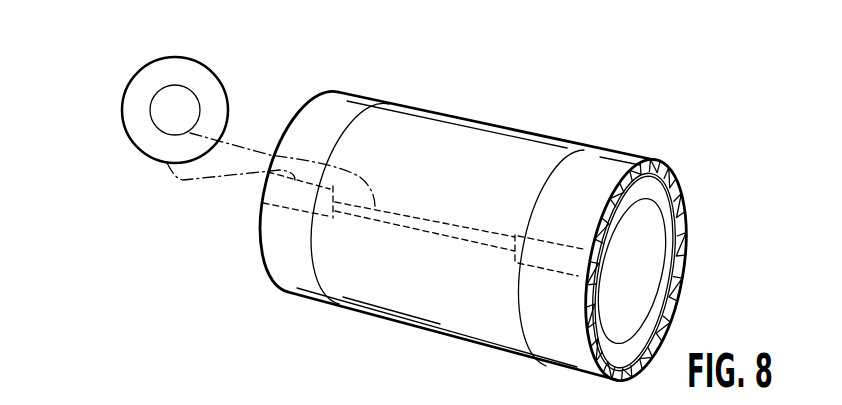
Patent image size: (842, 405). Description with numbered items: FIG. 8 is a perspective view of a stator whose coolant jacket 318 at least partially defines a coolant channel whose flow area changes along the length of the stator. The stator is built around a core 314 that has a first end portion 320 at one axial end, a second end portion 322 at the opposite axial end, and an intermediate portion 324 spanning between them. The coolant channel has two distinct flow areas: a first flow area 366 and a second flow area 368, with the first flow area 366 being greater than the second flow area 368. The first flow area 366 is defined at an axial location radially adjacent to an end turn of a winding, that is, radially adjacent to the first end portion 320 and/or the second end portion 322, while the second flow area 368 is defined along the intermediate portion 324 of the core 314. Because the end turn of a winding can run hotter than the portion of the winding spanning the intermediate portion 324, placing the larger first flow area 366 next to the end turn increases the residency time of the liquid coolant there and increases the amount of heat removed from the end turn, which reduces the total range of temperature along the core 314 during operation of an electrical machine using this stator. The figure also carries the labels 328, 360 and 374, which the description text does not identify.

The core 314 is at (687, 223).
The coolant jacket 318 is at (688, 262).
The first end portion 320 is at (368, 83).
The second end portion 322 is at (638, 144).
The intermediate portion 324 is at (478, 109).
The end wall 328 is at (282, 281).
The internal passage 360 is at (304, 376).
The first flow area 366 is at (133, 108).
The second flow area 368 is at (173, 103).
The groove 374 is at (285, 259).